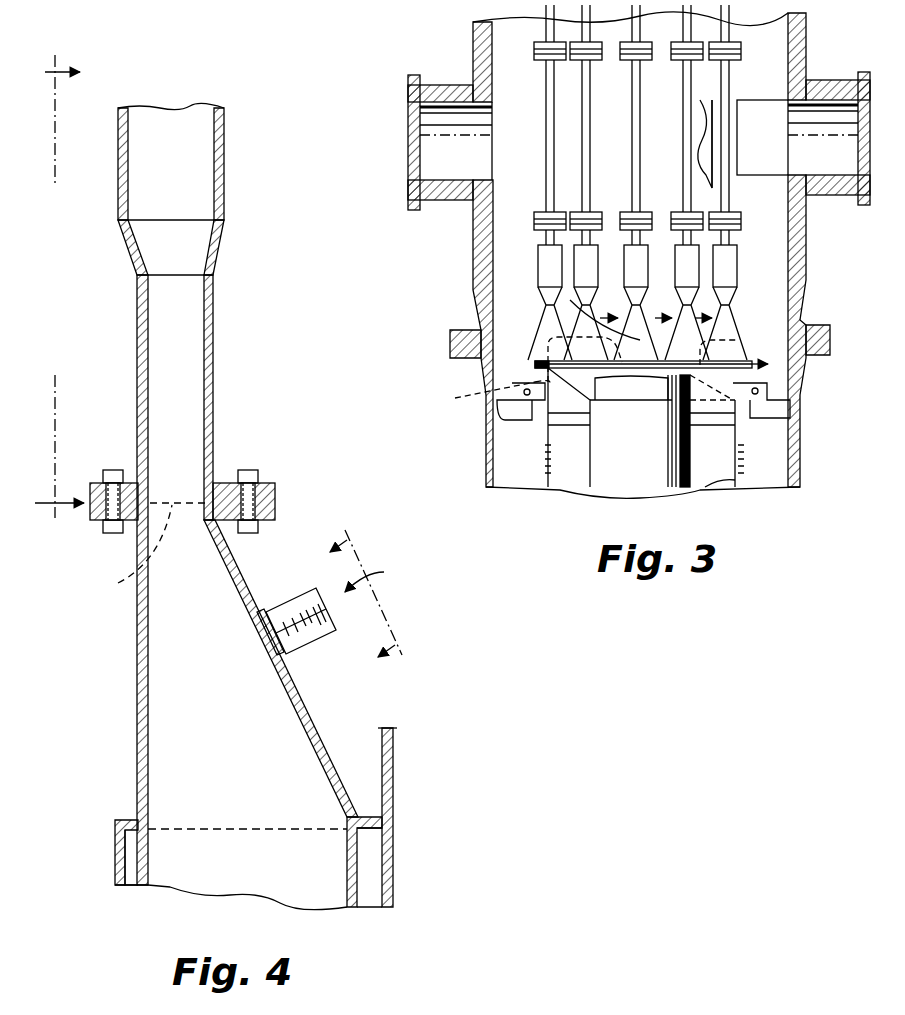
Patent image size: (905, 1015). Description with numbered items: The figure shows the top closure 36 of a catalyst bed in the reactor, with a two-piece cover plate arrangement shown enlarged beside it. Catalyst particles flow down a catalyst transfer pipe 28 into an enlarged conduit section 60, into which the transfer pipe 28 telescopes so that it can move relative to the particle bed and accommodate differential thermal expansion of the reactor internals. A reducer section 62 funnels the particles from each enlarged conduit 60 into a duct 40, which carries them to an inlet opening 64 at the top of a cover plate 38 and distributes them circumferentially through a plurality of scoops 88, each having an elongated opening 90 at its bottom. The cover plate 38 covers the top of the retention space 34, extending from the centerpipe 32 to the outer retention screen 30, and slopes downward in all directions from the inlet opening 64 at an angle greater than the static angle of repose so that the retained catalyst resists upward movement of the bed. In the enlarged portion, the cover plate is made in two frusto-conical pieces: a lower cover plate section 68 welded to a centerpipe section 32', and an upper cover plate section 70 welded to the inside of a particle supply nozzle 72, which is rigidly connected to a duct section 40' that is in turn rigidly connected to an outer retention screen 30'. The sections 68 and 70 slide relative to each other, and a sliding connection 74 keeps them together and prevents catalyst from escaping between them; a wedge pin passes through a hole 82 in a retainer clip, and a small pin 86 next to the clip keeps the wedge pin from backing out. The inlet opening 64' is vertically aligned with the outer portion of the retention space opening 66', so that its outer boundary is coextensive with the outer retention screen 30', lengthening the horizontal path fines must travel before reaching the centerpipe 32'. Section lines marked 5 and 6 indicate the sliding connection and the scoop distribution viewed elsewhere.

In FIG. 3, the catalyst transfer pipe 28 is at (546, 115).
In FIG. 3, the outer retention screen 30 is at (697, 427).
In FIG. 4, the outer retention screen 30' is at (94, 852).
In FIG. 3, the centerpipe 32 is at (693, 458).
In FIG. 4, the centerpipe section 32' is at (396, 862).
In FIG. 3, the retention space 34 is at (760, 470).
In FIG. 3, the top closure 36 is at (768, 364).
In FIG. 3, the cover plate 38 is at (545, 418).
In FIG. 3, the duct 40 is at (639, 255).
In FIG. 4, the duct section 40' is at (211, 592).
In FIG. 4, the enlarged conduit section 60 is at (224, 148).
In FIG. 3, the enlarged conduit section 60 is at (720, 250).
In FIG. 4, the reducer section 62 is at (216, 236).
In FIG. 3, the reducer section 62 is at (632, 300).
In FIG. 3, the inlet opening 64 is at (483, 397).
In FIG. 4, the inlet opening 64' is at (137, 550).
In FIG. 4, the retention space opening 66' is at (247, 807).
In FIG. 4, the lower cover plate section 68 is at (322, 735).
In FIG. 4, the upper cover plate section 70 is at (236, 562).
In FIG. 4, the particle supply nozzle 72 is at (96, 520).
In FIG. 4, the sliding connection 74 is at (379, 575).
In FIG. 4, the hole 82 is at (310, 640).
In FIG. 4, the small pin 86 is at (290, 618).
In FIG. 3, the scoops 88 is at (545, 318).
In FIG. 3, the elongated opening 90 is at (552, 340).
In FIG. 4, the section line 5- 5 is at (372, 594).
In FIG. 4, the section line 6- 6 is at (54, 284).